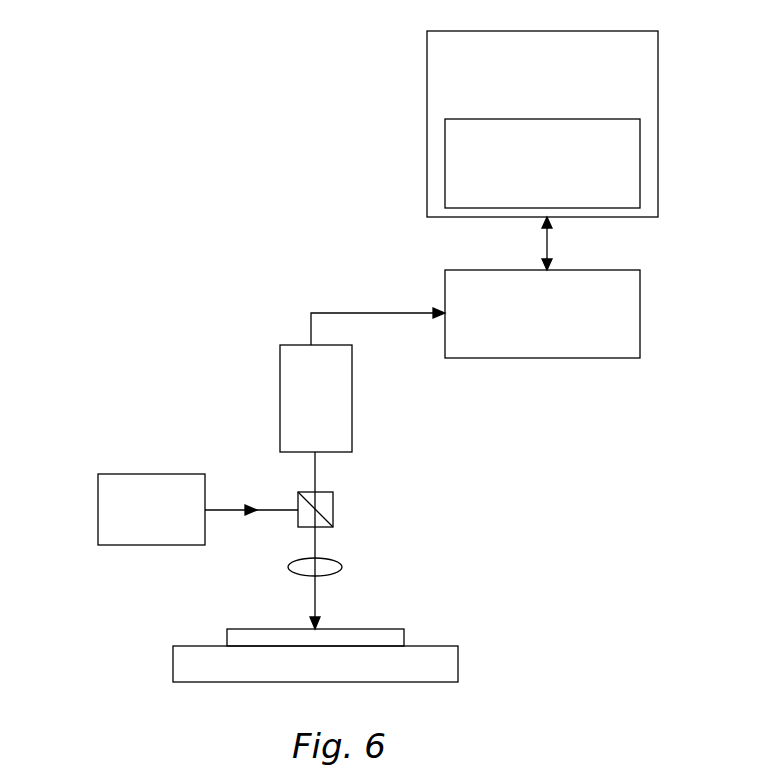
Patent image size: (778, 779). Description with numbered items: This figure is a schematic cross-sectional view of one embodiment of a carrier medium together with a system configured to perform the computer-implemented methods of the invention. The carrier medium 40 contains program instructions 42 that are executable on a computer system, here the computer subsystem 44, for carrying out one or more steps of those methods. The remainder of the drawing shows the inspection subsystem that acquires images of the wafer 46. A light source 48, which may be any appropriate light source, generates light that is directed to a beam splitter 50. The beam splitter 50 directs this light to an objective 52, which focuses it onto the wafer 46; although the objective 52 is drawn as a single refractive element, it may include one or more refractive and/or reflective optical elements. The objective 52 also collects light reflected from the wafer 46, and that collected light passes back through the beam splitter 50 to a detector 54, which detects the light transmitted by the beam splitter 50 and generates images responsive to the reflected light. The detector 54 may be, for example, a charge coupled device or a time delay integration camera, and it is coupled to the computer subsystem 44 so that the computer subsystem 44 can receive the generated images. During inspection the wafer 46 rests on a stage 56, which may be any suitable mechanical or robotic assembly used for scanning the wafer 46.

The carrier medium 40 is at (658, 47).
The program instructions 42 is at (640, 153).
The computer subsystem 44 is at (640, 307).
The wafer 46 is at (404, 629).
The light source 48 is at (98, 505).
The beam splitter 50 is at (333, 510).
The objective 52 is at (298, 560).
The detector 54 is at (280, 399).
The stage 56 is at (458, 664).